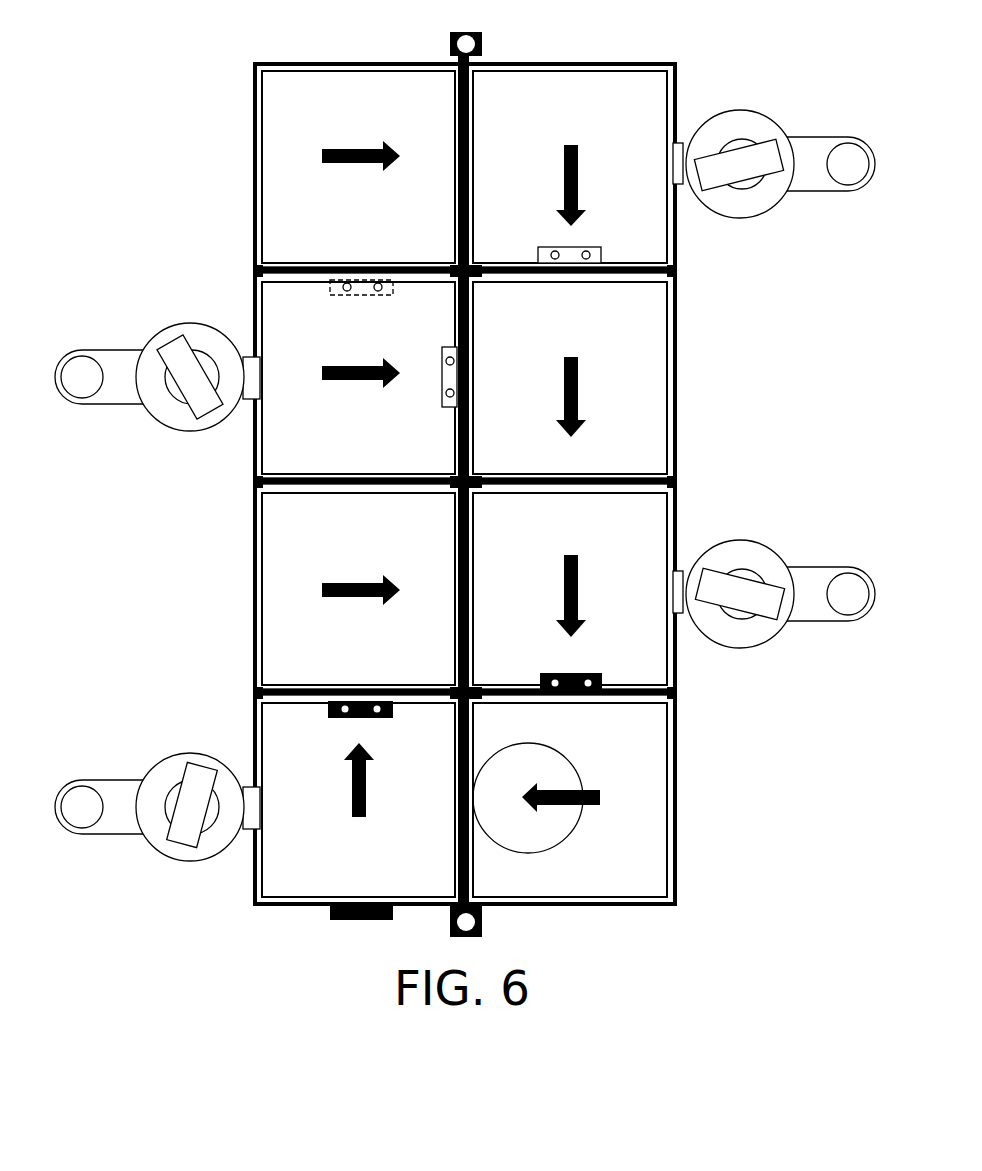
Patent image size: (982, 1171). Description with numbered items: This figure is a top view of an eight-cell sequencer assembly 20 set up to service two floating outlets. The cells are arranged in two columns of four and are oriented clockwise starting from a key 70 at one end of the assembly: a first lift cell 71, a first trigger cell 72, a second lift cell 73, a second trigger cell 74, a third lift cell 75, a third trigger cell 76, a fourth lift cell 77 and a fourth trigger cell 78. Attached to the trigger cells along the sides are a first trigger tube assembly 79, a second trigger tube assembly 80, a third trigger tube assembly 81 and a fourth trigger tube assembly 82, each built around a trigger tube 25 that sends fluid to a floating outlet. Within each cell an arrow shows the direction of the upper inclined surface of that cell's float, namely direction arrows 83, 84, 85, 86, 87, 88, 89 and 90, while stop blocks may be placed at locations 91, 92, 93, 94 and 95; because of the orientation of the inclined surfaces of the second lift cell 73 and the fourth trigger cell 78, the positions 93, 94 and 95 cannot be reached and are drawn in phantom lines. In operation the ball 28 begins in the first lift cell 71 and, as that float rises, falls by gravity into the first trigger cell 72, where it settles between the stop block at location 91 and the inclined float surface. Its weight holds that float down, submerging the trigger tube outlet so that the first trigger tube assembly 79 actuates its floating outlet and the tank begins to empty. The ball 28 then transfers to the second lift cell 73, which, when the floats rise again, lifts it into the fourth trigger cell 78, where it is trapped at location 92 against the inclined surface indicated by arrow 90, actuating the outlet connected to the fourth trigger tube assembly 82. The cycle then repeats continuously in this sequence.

The sequencer assembly 20 is at (368, 28).
The trigger tube 25 is at (760, 612).
The movable mass 28 is at (527, 770).
The key 70 is at (328, 914).
The first lift cell 71 is at (677, 892).
The first trigger cell 72 is at (253, 712).
The second lift cell 73 is at (253, 540).
The second trigger cell 74 is at (253, 304).
The third lift cell 75 is at (253, 198).
The third trigger cell 76 is at (677, 236).
The fourth lift cell 77 is at (677, 470).
The fourth trigger cell 78 is at (677, 655).
The first trigger tube assembly 79 is at (147, 773).
The second trigger tube assembly 80 is at (147, 344).
The third trigger tube assembly 81 is at (777, 206).
The fourth trigger tube assembly 82 is at (774, 611).
The direction arrow 83 is at (600, 797).
The direction arrow 84 is at (367, 806).
The direction arrow 85 is at (350, 589).
The direction arrow 86 is at (320, 378).
The direction arrow 87 is at (322, 150).
The direction arrow 88 is at (565, 160).
The direction arrow 89 is at (562, 377).
The direction arrow 90 is at (562, 587).
The stop block location 91 is at (328, 710).
The stop block location 92 is at (602, 678).
The stop block location 93 is at (442, 382).
The stop block location 94 is at (329, 290).
The stop block location 95 is at (602, 254).